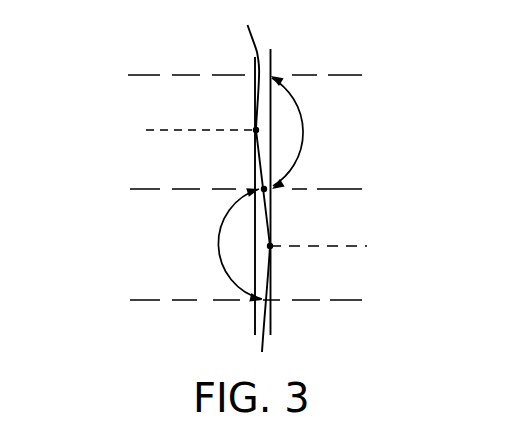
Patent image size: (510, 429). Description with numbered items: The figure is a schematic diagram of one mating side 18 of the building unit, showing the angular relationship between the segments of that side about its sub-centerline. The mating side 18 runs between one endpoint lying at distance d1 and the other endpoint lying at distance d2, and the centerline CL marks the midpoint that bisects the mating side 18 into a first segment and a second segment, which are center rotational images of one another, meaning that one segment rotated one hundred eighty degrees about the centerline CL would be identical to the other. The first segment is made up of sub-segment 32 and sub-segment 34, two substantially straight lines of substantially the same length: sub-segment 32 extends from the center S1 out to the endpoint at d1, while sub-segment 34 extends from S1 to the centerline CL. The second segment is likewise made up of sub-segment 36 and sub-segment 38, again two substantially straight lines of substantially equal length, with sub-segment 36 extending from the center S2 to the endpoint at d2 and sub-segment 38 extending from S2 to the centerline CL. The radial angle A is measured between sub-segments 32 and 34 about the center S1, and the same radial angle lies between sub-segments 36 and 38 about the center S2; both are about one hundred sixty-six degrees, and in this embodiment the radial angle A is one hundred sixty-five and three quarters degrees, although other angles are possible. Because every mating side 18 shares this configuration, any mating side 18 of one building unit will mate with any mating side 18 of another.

The mating side 18 is at (257, 153).
The sub-segment 32 is at (255, 100).
The sub-segment 34 is at (256, 171).
The sub-segment 36 is at (270, 273).
The sub-segment 38 is at (269, 207).
The radial angle A is at (305, 128).
The distance d1 is at (231, 74).
The distance d2 is at (231, 301).
The center s1 S1 is at (186, 130).
The center s2 S2 is at (332, 250).
The centerline CL is at (234, 188).